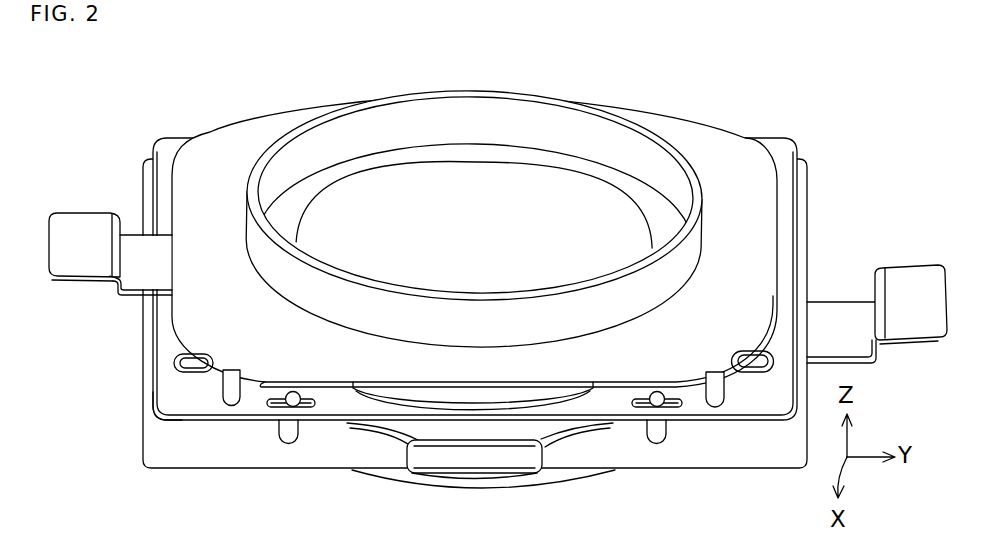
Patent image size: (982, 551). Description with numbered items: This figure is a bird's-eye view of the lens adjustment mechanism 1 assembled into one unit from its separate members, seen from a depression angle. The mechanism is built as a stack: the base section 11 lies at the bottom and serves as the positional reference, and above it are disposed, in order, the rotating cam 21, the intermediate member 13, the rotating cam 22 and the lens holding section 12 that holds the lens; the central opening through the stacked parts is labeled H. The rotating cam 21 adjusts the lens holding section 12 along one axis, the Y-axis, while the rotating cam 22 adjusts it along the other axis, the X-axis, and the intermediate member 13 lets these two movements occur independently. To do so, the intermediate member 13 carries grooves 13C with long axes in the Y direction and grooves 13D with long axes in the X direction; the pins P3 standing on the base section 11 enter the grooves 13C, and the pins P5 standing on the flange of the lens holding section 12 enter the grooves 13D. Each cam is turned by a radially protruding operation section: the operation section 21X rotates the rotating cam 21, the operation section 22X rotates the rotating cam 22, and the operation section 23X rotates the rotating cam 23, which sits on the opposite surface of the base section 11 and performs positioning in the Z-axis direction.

The lens adjustment mechanism 1 is at (799, 105).
The base section 11 is at (800, 207).
The lens holding section 12 is at (712, 133).
The intermediate member 13 is at (783, 154).
The groove 13C is at (156, 406).
The groove 13D is at (258, 385).
The pin P5 is at (232, 391).
The pin P3 is at (292, 443).
The rotating cam 21 is at (422, 432).
The operation section 21X is at (515, 458).
The rotating cam 22 is at (413, 393).
The operation section 22X is at (82, 221).
The rotating cam 23 is at (470, 486).
The operation section 23X is at (909, 273).
The opening (hole) H is at (503, 210).